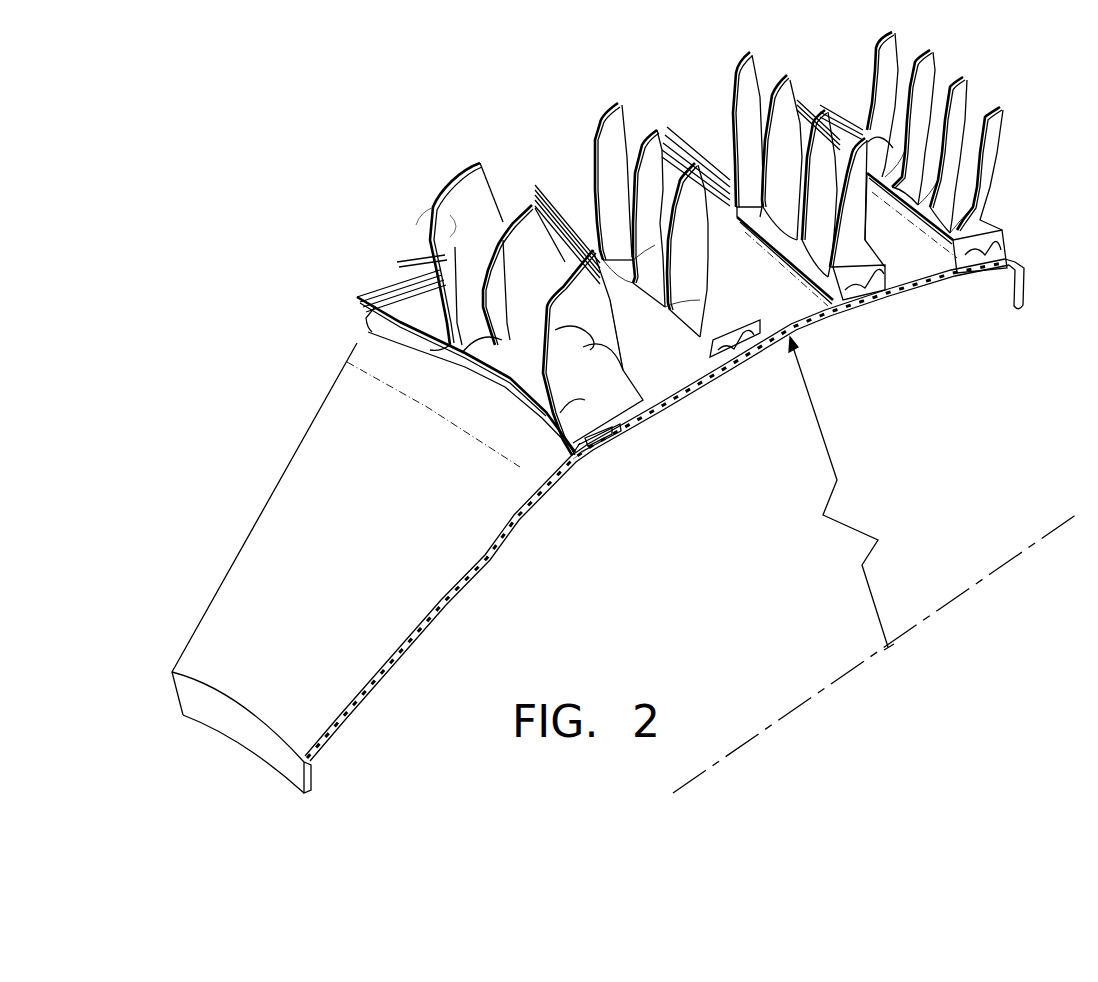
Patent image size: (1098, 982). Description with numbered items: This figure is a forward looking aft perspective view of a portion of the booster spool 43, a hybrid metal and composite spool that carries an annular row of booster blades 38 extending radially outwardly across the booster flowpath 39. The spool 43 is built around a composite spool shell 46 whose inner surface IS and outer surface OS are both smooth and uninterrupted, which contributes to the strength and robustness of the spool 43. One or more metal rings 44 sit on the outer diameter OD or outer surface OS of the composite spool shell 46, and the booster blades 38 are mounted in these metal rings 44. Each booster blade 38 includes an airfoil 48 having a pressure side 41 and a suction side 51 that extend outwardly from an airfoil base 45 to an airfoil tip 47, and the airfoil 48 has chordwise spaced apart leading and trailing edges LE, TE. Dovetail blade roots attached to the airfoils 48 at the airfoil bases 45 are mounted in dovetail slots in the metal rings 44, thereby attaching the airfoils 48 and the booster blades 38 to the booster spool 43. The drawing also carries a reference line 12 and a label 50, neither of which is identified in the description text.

The engine centerline axis 12 is at (977, 585).
The booster blades 38 is at (488, 178).
The booster flowpath 39 is at (792, 302).
The pressure side 41 is at (457, 182).
The booster spool 43 is at (295, 443).
The metal rings 44 is at (697, 383).
The airfoil base 45 is at (565, 447).
The composite spool shell 46 is at (640, 427).
The airfoil tip 47 is at (550, 254).
The airfoil 48 is at (627, 381).
The inner shroud surface 50 is at (575, 456).
The suction side 51 is at (457, 225).
The inner surface IS is at (445, 610).
The outer surface OS is at (903, 267).
The leading edge LE is at (528, 410).
The trailing edge TE is at (627, 327).
The outer diameter OD is at (818, 448).